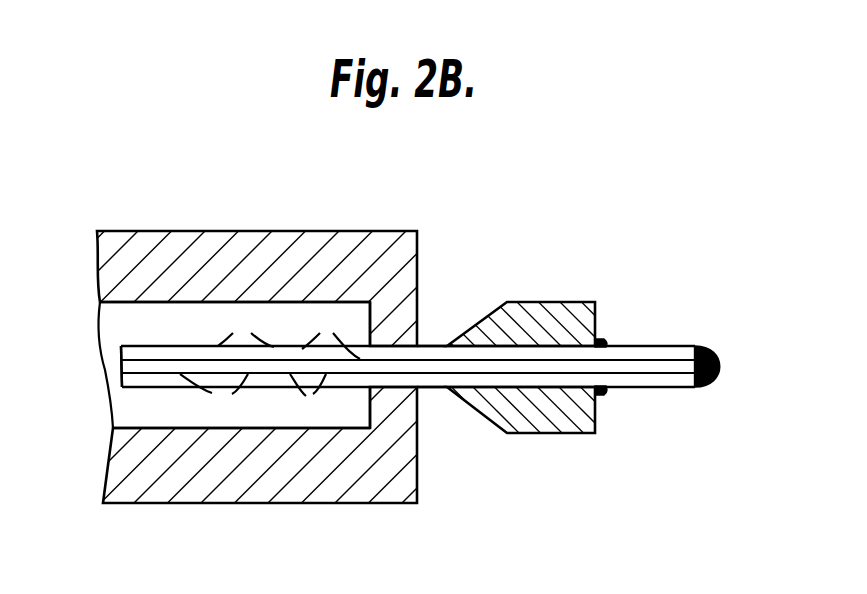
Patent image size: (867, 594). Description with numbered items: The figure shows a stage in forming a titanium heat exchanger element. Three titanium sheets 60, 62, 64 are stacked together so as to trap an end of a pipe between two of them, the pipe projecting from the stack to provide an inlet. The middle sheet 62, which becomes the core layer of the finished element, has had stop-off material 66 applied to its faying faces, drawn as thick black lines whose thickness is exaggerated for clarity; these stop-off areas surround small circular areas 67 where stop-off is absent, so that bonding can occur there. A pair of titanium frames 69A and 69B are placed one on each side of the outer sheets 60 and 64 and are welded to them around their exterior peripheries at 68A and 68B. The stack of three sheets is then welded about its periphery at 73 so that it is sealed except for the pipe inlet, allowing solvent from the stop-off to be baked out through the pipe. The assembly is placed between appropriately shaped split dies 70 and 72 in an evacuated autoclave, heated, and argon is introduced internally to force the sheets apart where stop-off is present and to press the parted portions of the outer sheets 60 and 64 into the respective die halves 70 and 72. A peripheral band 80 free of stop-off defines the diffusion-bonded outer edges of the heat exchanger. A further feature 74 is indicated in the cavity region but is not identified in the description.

The titanium sheet 60 is at (153, 388).
The middle sheet 62 is at (118, 371).
The titanium sheet 64 is at (170, 349).
The stop-off material 66 is at (325, 366).
The small circular areas 67 is at (227, 366).
The weld 68A is at (606, 393).
The weld 68B is at (618, 343).
The titanium frame 69A is at (538, 408).
The titanium frame 69B is at (538, 325).
The split die 70 is at (357, 475).
The split die 72 is at (380, 245).
The peripheral weld 73 is at (712, 350).
The cavity 74 is at (113, 322).
The peripheral band 80 is at (432, 376).